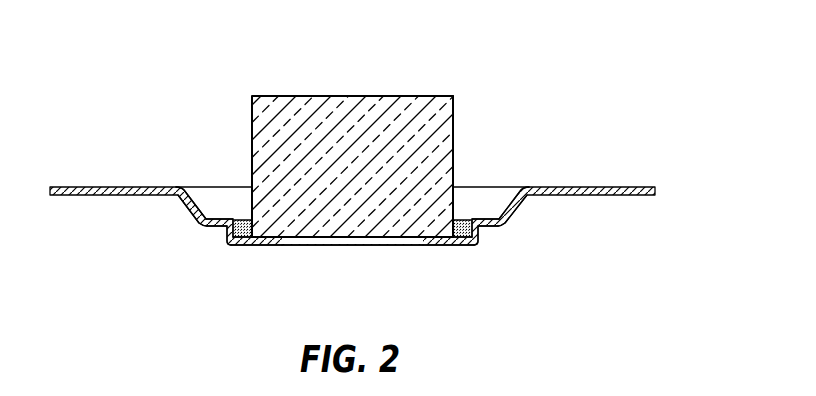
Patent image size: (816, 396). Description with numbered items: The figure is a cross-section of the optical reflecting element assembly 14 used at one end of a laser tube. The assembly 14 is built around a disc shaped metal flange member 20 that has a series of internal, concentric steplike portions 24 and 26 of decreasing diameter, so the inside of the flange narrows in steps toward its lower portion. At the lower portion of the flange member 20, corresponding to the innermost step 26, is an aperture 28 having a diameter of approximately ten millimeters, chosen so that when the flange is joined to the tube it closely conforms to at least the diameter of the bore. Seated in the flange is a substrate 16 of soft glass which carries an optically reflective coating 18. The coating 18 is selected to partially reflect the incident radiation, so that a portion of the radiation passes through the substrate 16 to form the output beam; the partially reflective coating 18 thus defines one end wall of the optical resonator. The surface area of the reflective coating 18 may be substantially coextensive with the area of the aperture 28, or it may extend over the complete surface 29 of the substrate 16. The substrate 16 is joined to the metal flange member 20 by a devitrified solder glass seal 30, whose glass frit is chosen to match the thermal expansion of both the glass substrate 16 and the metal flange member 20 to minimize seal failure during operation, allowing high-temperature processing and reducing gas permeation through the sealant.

The assembly 14 is at (383, 94).
The substrate 16 is at (456, 122).
The optically reflective coating 18 is at (365, 246).
The metal flange member 20 is at (79, 196).
The steplike portion 24 is at (200, 227).
The steplike portion 26 is at (260, 246).
The aperture 28 is at (314, 246).
The surface of substrate 29 is at (242, 219).
The devitrified solder glass seal 30 is at (228, 246).